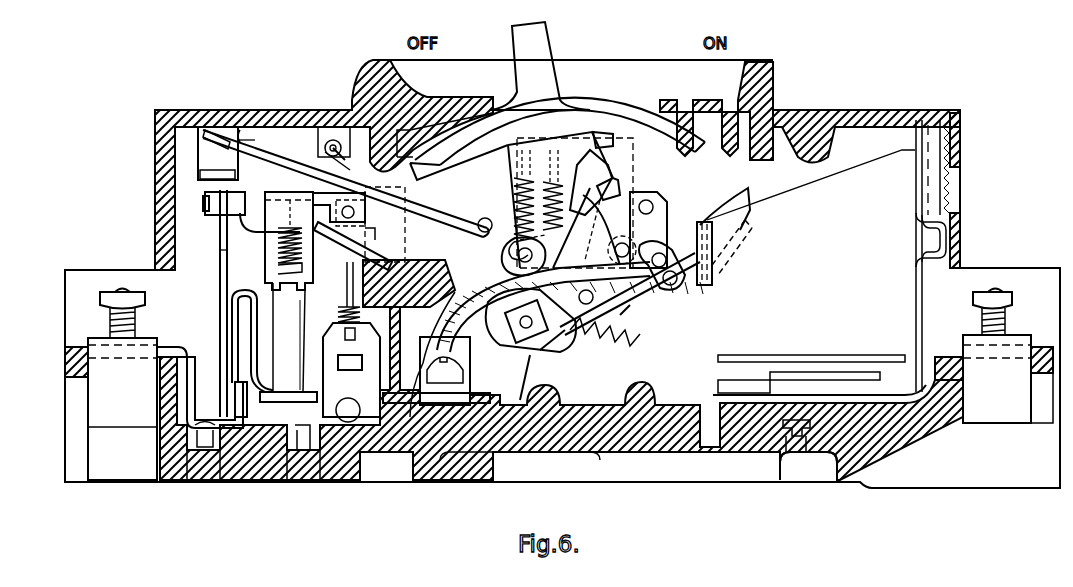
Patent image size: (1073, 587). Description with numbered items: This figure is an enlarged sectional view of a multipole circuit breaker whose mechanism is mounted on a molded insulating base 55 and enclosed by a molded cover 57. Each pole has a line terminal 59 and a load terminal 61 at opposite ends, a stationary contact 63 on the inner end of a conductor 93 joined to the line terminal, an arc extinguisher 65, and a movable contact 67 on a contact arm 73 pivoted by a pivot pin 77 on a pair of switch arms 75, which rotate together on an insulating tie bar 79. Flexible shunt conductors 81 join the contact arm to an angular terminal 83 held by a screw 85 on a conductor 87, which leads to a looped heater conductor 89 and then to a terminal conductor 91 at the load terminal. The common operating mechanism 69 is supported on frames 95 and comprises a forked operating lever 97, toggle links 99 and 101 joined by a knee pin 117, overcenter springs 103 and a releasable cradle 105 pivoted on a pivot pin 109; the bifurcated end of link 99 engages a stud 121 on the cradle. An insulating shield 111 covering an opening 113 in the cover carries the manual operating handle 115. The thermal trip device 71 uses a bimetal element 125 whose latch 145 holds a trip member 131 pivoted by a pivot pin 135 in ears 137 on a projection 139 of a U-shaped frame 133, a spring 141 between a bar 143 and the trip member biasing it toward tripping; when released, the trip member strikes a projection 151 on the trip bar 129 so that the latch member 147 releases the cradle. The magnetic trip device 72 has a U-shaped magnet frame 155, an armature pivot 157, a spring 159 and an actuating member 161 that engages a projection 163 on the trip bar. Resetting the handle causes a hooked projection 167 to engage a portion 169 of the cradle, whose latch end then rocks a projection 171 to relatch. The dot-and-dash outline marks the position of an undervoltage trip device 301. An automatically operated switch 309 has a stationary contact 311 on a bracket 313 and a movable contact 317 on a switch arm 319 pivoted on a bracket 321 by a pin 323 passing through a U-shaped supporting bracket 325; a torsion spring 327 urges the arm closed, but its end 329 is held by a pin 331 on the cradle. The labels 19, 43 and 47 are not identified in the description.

The circuit breaker 19 is at (97, 232).
The terminal screw 43 is at (1012, 300).
The terminal screw 47 is at (103, 296).
The base 55 is at (268, 472).
The cover 57 is at (400, 100).
The line terminal 59 is at (1005, 398).
The load terminal 61 is at (122, 401).
The stationary contact 63 is at (740, 380).
The arc extinguisher 65 is at (820, 304).
The movable contact 67 is at (744, 243).
The operating mechanism 69 is at (512, 193).
The thermal trip device 71 is at (250, 257).
The magnetic trip device 72 is at (357, 391).
The contact arm 73 is at (690, 240).
The switch arms 75 is at (646, 214).
The pivot pin 77 is at (680, 295).
The tie bar 79 is at (540, 358).
The flexible shunt conductors 81 is at (539, 320).
The angular terminal 83 is at (405, 445).
The screw 85 is at (470, 375).
The conductor 87 is at (444, 403).
The looped heater conductor 89 is at (230, 303).
The terminal conductor 91 is at (184, 348).
The conductor 93 is at (855, 390).
The frames 95 is at (705, 200).
The forked operating lever 97 is at (508, 148).
The toggle link 99 is at (575, 205).
The toggle link 101 is at (608, 250).
The overcenter springs 103 is at (540, 166).
The releasable cradle 105 is at (512, 197).
The pivot pin 109 is at (632, 190).
The insulating shield 111 is at (595, 115).
The opening 113 is at (655, 104).
The manual operating handle 115 is at (540, 36).
The knee pin 117 is at (515, 258).
The stud 121 is at (591, 205).
The bimetal element 125 is at (220, 258).
The trip bar 129 is at (409, 338).
The trip member 131 is at (240, 230).
The U-shaped frame 133 is at (290, 295).
The pivot pin 135 is at (358, 210).
The ears 137 is at (345, 195).
The projection 139 is at (300, 198).
The spring 141 is at (291, 230).
The bar 143 is at (285, 272).
The latch 145 is at (240, 203).
The latch member 147 is at (404, 224).
The projection 151 is at (355, 252).
The U-shaped magnet frame 155 is at (335, 336).
The armature pivot 157 is at (340, 358).
The spring 159 is at (353, 352).
The actuating member 161 is at (289, 337).
The projection 163 is at (370, 268).
The hooked projection 167 is at (620, 170).
The portion 169 is at (614, 140).
The projection 171 is at (570, 307).
The undervoltage trip device 301 is at (438, 125).
The automatically operated switch 309 is at (290, 146).
The stationary contact 311 is at (200, 173).
The bracket 313 is at (208, 150).
The movable contact 317 is at (215, 128).
The switch arm 319 is at (243, 130).
The bracket 321 is at (330, 145).
The pin 323 is at (335, 127).
The U-shaped supporting bracket 325 is at (300, 160).
The torsion spring 327 is at (325, 152).
The end 329 is at (478, 232).
The pin 331 is at (479, 220).